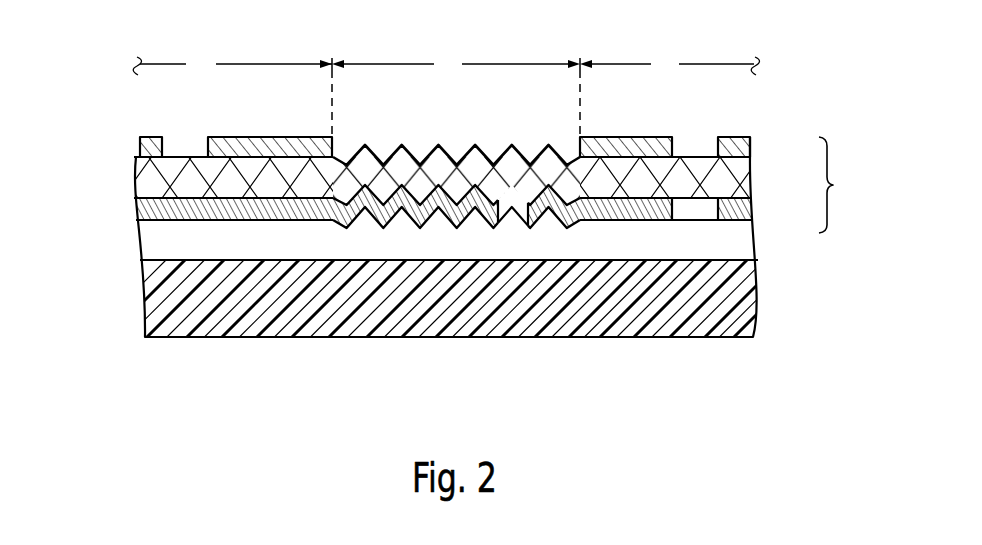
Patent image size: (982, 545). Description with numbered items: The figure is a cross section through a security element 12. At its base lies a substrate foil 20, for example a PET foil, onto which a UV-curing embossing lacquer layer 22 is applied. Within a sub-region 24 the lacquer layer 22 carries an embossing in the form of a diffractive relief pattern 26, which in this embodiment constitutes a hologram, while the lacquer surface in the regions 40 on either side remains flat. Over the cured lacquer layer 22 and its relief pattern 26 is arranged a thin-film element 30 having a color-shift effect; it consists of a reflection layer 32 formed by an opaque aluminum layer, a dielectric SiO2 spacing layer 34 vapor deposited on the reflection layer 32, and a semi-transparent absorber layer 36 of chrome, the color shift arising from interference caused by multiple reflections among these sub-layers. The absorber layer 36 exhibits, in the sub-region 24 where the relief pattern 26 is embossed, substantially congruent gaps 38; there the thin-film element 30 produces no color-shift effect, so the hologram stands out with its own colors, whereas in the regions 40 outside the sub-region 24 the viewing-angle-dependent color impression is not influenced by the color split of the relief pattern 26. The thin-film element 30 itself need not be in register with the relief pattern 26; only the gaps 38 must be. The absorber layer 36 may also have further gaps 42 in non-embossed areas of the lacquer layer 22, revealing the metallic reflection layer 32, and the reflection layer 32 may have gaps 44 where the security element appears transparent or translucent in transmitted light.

The security element 12 is at (94, 79).
The substrate foil 20 is at (737, 297).
The embossing lacquer layer 22 is at (740, 245).
The sub-region 24 is at (456, 65).
The diffractive relief pattern 26 is at (360, 229).
The thin-film element 30 is at (841, 196).
The reflection layer 32 is at (740, 210).
The dielectric spacing layer 34 is at (732, 180).
The absorber layer 36 is at (735, 149).
The gaps 38 is at (459, 138).
The regions outside the sub-regions 40 is at (446, 95).
The further gaps 42 is at (194, 140).
The gaps in the reflection layer 44 is at (513, 212).